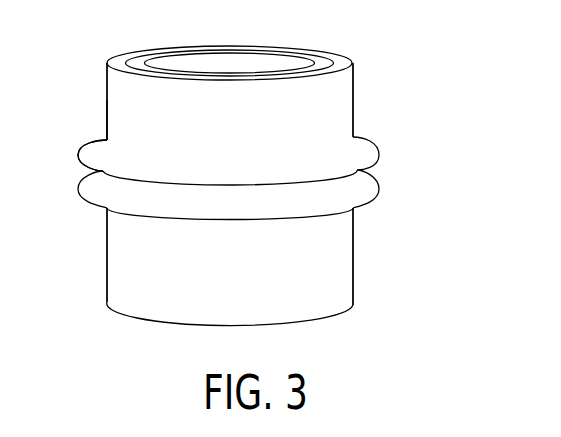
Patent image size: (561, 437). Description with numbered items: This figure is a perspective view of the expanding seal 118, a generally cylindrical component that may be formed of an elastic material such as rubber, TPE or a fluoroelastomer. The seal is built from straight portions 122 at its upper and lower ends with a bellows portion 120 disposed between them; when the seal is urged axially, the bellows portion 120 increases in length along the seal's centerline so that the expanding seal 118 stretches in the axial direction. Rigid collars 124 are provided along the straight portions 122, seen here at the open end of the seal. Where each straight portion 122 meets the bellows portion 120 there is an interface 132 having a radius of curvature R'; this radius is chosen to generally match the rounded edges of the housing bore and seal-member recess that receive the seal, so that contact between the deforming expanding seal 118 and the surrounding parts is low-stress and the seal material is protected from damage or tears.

The expanding seal 118 is at (396, 75).
The bellows portion 120 is at (405, 163).
The straight portions 122 is at (353, 113).
The rigid collar 124 is at (319, 62).
The interface 132 is at (97, 143).
The radius of curvature R' is at (73, 89).